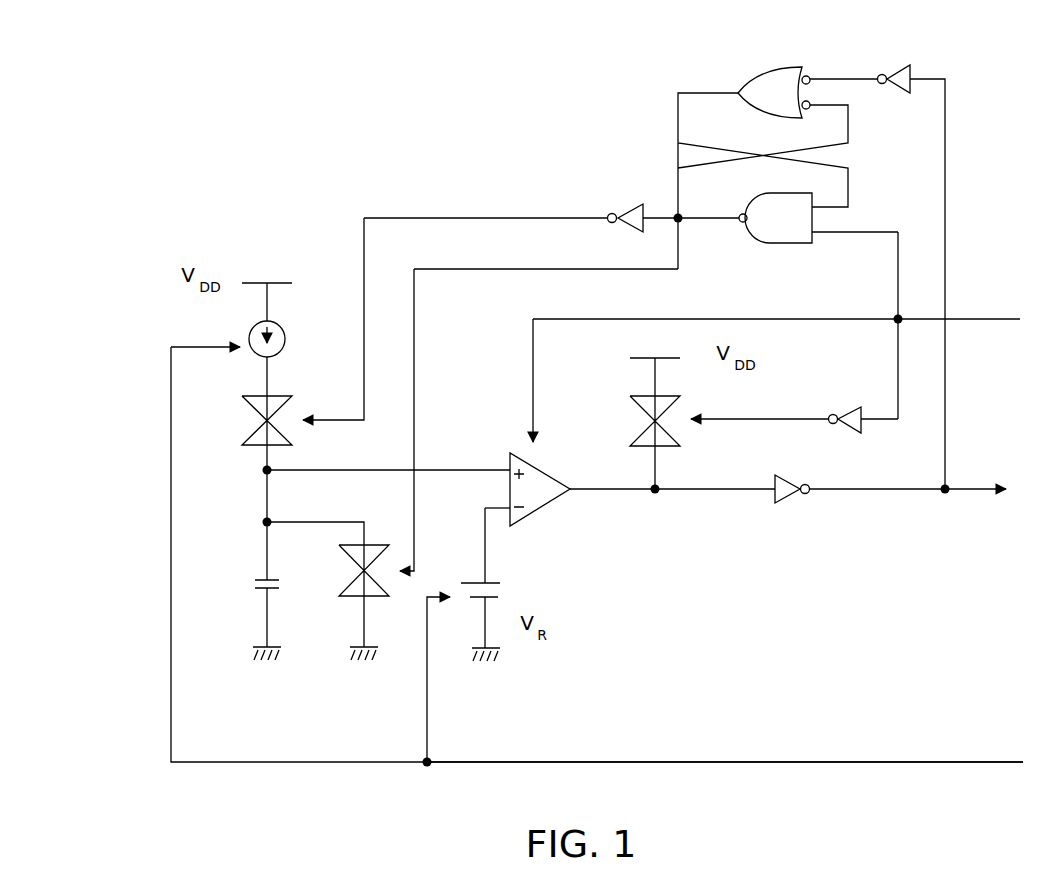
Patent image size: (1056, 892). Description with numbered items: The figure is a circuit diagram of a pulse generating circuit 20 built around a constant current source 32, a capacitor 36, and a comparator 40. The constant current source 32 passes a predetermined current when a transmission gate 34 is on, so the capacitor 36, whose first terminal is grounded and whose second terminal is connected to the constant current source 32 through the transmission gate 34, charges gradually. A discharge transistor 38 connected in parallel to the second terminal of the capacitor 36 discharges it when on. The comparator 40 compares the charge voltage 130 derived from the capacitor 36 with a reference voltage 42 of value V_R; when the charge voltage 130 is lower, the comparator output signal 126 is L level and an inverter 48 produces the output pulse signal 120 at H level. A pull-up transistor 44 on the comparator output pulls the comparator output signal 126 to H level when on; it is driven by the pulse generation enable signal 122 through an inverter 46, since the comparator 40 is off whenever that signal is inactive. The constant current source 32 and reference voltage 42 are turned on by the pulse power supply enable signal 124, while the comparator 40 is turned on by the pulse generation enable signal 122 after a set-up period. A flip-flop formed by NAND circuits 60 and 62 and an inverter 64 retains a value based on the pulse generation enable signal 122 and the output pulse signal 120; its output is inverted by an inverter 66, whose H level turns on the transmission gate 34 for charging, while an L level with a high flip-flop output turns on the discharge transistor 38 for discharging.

The pulse generating circuit 20 is at (218, 106).
The constant current source 32 is at (252, 335).
The transmission gate 34 is at (250, 410).
The capacitor 36 is at (255, 580).
The discharge transistor 38 is at (340, 555).
The comparator 40 is at (553, 507).
The reference voltage 42 is at (503, 583).
The pull-up transistor 44 is at (630, 405).
The inverter 46 is at (838, 408).
The inverter 48 is at (790, 500).
The NAND circuit 60 is at (738, 90).
The NAND circuit 62 is at (752, 238).
The inverter 64 is at (890, 93).
The inverter 66 is at (628, 205).
The output pulse signal 120 is at (968, 488).
The pulse generation enable signal 122 is at (993, 322).
The pulse power supply enable signal 124 is at (995, 763).
The comparator output signal 126 is at (707, 492).
The charge voltage 130 is at (443, 469).